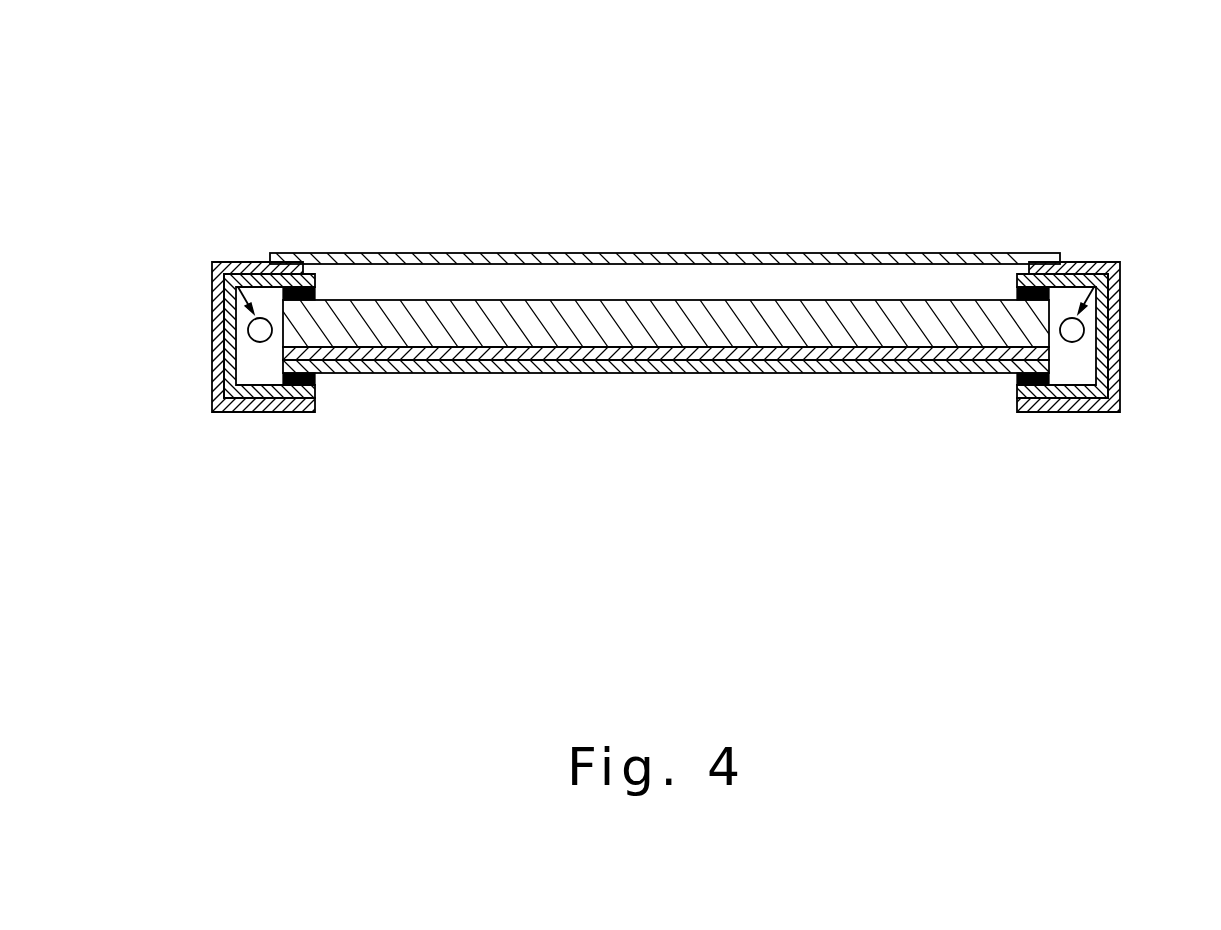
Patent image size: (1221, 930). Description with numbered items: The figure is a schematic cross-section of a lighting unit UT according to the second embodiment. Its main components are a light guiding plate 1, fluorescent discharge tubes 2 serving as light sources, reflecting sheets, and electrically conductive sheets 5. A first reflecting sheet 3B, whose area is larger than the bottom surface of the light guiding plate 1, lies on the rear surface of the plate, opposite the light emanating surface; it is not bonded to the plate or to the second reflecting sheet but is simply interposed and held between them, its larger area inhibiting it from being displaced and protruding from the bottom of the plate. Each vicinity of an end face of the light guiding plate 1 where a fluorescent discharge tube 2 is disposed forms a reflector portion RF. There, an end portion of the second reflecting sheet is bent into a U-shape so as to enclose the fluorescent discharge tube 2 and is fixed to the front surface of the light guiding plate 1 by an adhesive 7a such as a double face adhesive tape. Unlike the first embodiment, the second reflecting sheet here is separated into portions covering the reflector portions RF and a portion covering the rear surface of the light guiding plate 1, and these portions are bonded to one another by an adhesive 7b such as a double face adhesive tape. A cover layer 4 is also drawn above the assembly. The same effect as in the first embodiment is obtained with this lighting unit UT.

The lighting unit UT is at (657, 51).
The light guiding plate 1 is at (608, 322).
The fluorescent discharge tube 2 is at (251, 338).
The first reflecting sheet 3B is at (873, 353).
The cover plate 4 is at (535, 253).
The electrically conductive sheet 5 is at (212, 323).
The adhesive 7a is at (315, 293).
The adhesive 7b is at (317, 382).
The reflector portion RF is at (232, 264).